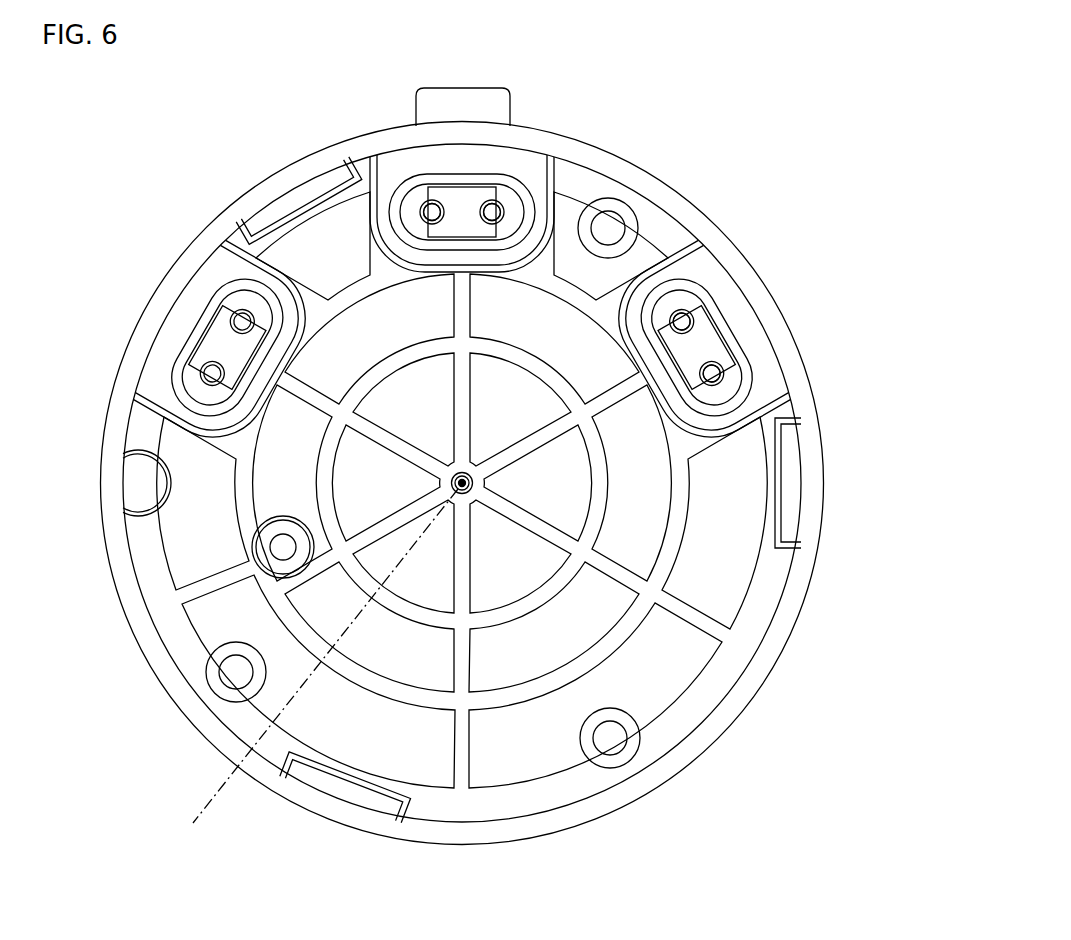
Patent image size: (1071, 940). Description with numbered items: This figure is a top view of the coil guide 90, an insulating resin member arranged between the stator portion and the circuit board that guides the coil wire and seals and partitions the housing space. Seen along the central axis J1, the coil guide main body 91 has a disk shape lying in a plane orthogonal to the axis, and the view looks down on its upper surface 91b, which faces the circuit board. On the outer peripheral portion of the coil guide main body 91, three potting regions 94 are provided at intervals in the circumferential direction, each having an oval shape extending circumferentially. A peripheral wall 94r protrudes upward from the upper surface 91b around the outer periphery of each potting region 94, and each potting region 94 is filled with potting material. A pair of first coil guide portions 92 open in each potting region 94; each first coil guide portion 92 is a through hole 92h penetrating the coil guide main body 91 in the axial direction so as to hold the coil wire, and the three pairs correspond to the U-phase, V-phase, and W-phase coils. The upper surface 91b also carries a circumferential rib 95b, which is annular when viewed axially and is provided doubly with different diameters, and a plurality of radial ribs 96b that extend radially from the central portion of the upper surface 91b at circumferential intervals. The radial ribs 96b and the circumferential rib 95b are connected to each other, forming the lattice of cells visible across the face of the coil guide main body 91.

The coil guide 90 is at (678, 190).
The coil guide main body 91 is at (722, 247).
The first coil guide portion 92 is at (489, 202).
The through hole 92h is at (684, 318).
The potting region 94 is at (724, 353).
The peripheral wall 94r is at (457, 266).
The circumferential rib 95b is at (548, 597).
The upper surface 91b is at (358, 738).
The radial rib 96b is at (460, 752).
The central axis J1 is at (318, 673).